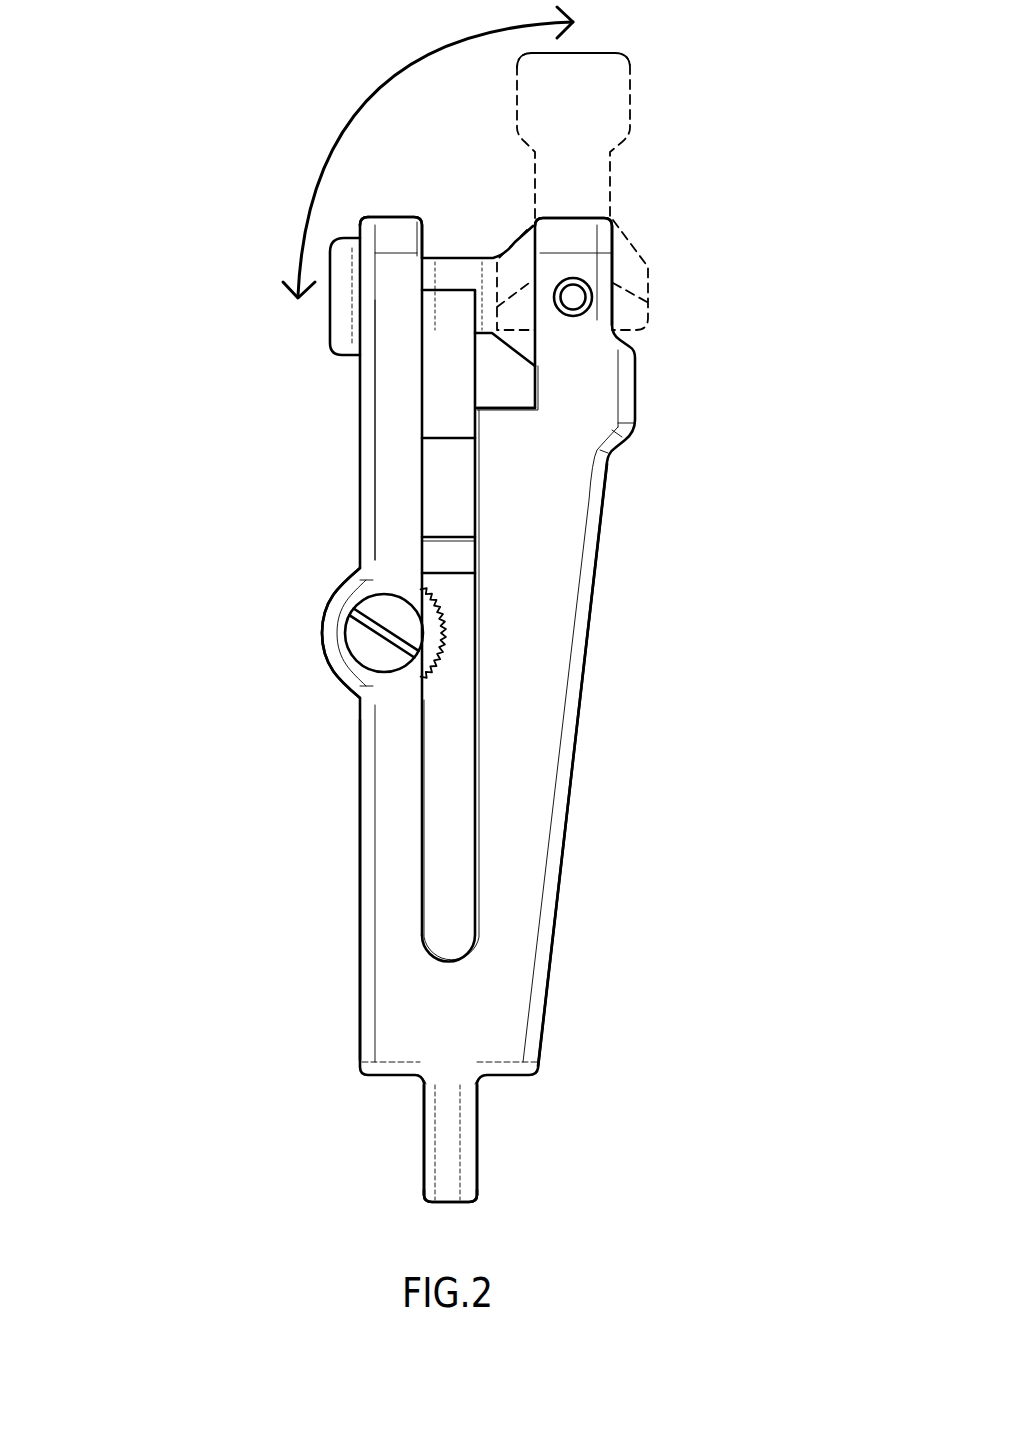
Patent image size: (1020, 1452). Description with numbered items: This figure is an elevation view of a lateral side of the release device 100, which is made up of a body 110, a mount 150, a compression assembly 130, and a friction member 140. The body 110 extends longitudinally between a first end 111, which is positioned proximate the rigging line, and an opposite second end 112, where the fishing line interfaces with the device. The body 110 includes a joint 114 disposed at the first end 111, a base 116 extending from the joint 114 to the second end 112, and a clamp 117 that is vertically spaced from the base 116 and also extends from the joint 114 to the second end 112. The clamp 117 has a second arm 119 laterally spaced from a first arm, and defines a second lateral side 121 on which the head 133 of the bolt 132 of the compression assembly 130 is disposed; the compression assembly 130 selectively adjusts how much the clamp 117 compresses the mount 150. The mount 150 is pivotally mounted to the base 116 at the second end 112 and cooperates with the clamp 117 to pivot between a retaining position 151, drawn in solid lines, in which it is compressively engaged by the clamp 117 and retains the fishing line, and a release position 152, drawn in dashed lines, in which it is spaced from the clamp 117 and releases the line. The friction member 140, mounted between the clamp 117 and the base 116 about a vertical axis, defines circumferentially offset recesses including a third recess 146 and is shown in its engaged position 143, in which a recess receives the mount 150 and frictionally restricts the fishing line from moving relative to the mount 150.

The release device 100 is at (174, 1222).
The body 110 is at (279, 1026).
The first end 111 is at (445, 1205).
The second end 112 is at (398, 215).
The joint 114 is at (478, 1143).
The base 116 is at (551, 915).
The clamp 117 is at (361, 950).
The second arm 119 is at (360, 408).
The second lateral side 121 is at (398, 492).
The compression assembly 130 is at (434, 664).
The bolt 132 is at (352, 665).
The head 133 is at (385, 605).
The friction member 140 is at (456, 416).
The engaged position 143 is at (486, 377).
The third recess 146 is at (455, 537).
The mount 150 is at (447, 138).
The retaining position 151 is at (495, 236).
The release position 152 is at (521, 154).